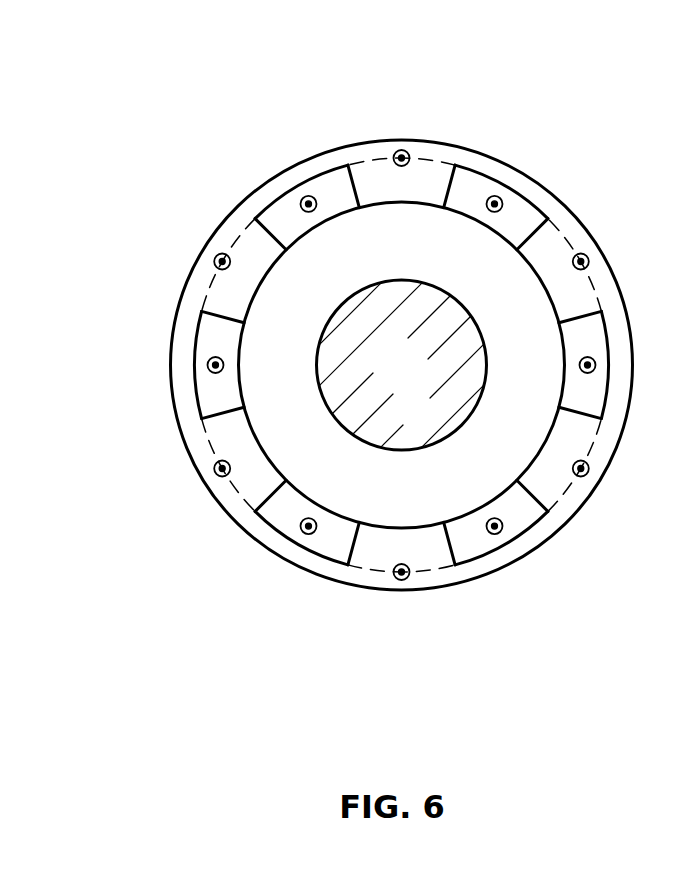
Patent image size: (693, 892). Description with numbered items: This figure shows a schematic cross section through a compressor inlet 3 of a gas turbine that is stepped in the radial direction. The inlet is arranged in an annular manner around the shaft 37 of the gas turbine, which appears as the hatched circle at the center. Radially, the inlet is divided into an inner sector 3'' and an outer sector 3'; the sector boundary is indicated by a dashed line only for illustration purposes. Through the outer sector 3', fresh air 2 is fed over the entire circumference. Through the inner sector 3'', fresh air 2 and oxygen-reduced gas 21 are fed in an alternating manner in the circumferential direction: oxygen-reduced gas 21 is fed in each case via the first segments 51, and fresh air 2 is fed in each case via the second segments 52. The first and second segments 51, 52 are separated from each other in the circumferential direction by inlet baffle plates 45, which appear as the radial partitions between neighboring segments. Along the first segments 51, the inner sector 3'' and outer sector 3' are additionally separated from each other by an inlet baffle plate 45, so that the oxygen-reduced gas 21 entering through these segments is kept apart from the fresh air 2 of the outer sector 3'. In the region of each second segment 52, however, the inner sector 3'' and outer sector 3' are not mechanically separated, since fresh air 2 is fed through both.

The fresh air 2 is at (213, 262).
The compressor inlet 3 is at (403, 297).
The outer sector 3' is at (201, 232).
The inner sector 3'' is at (179, 485).
The oxygen-reduced gas 21 is at (302, 533).
The shaft 37 is at (386, 378).
The inlet baffle plate 45 is at (293, 185).
The first segment 51 is at (333, 192).
The second segment 52 is at (227, 290).